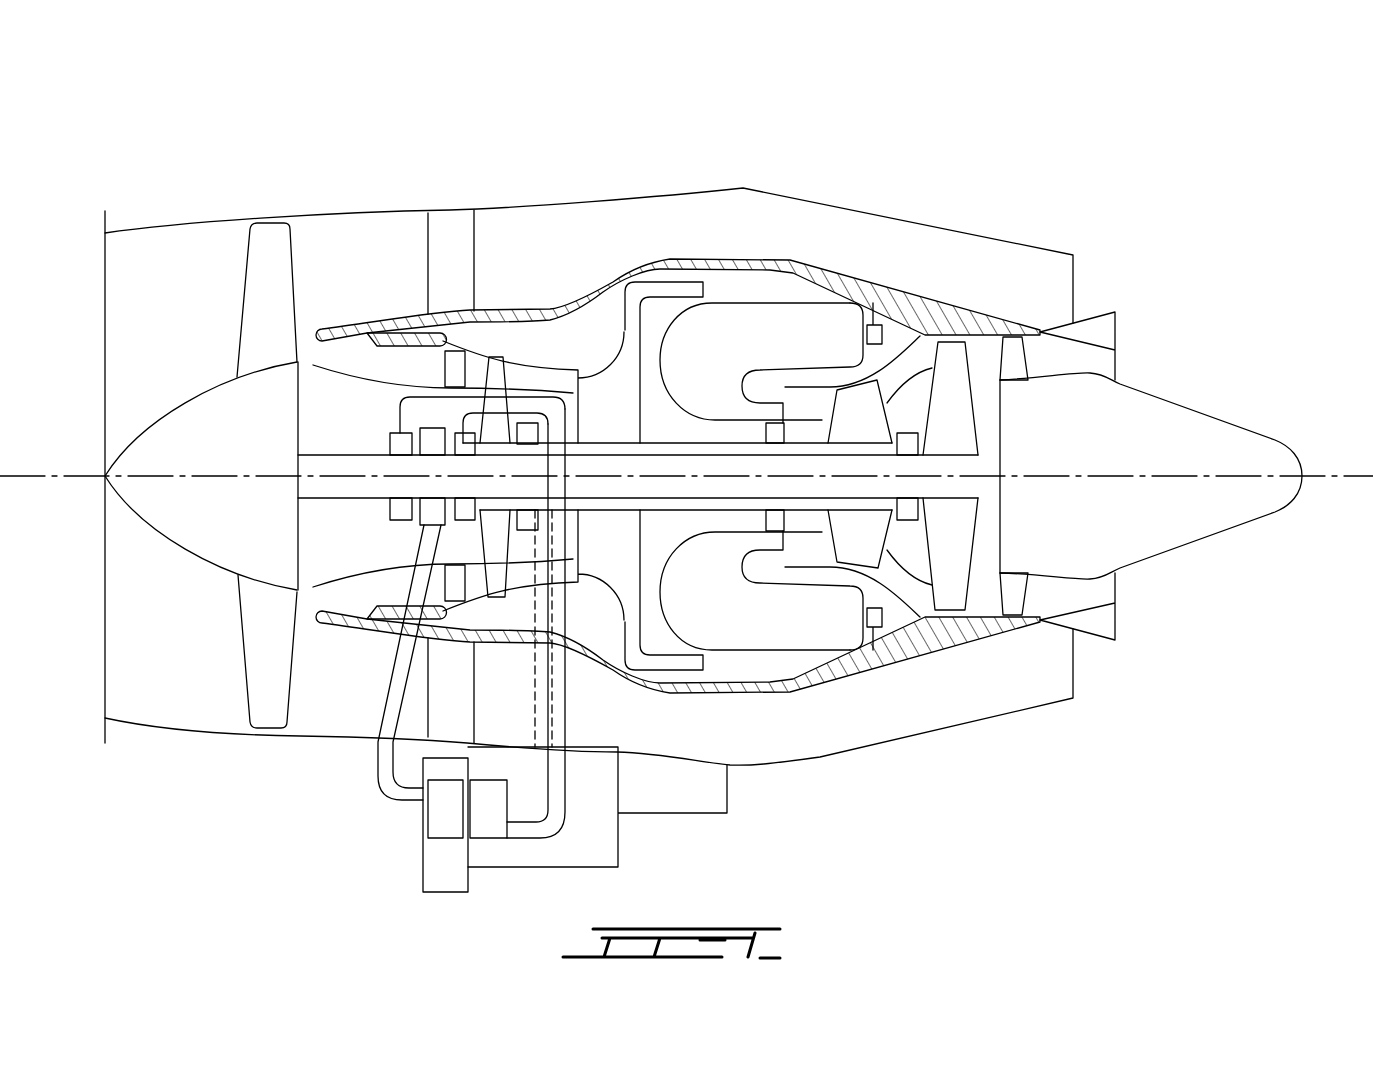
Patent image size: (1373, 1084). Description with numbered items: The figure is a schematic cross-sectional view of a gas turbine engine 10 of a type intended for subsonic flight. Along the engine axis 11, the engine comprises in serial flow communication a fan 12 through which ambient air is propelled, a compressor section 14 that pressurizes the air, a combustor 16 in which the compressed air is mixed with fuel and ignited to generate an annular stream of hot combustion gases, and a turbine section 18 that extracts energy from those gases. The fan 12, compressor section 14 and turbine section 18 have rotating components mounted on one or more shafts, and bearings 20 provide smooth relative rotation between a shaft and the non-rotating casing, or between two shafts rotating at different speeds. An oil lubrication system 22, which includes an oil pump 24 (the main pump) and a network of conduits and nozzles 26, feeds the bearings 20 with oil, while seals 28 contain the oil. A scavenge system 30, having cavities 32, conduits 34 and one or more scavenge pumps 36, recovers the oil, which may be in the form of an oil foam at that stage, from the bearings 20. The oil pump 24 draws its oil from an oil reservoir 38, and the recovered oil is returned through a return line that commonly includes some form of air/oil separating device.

The gas turbine engine 10 is at (917, 151).
The engine axis 11 is at (1340, 474).
The fan 12 is at (270, 647).
The compressor section 14 is at (532, 370).
The combustor 16 is at (767, 323).
The turbine section 18 is at (905, 547).
The bearings 20 is at (433, 428).
The oil lubrication system 22 is at (377, 783).
The oil pump 24 is at (440, 828).
The network of conduits and nozzles 26 is at (375, 740).
The seals 28 is at (398, 403).
The scavenge system 30 is at (567, 767).
The cavities 32 is at (462, 388).
The conduits 34 is at (553, 832).
The scavenge pumps 36 is at (493, 832).
The oil reservoir 38 is at (443, 893).